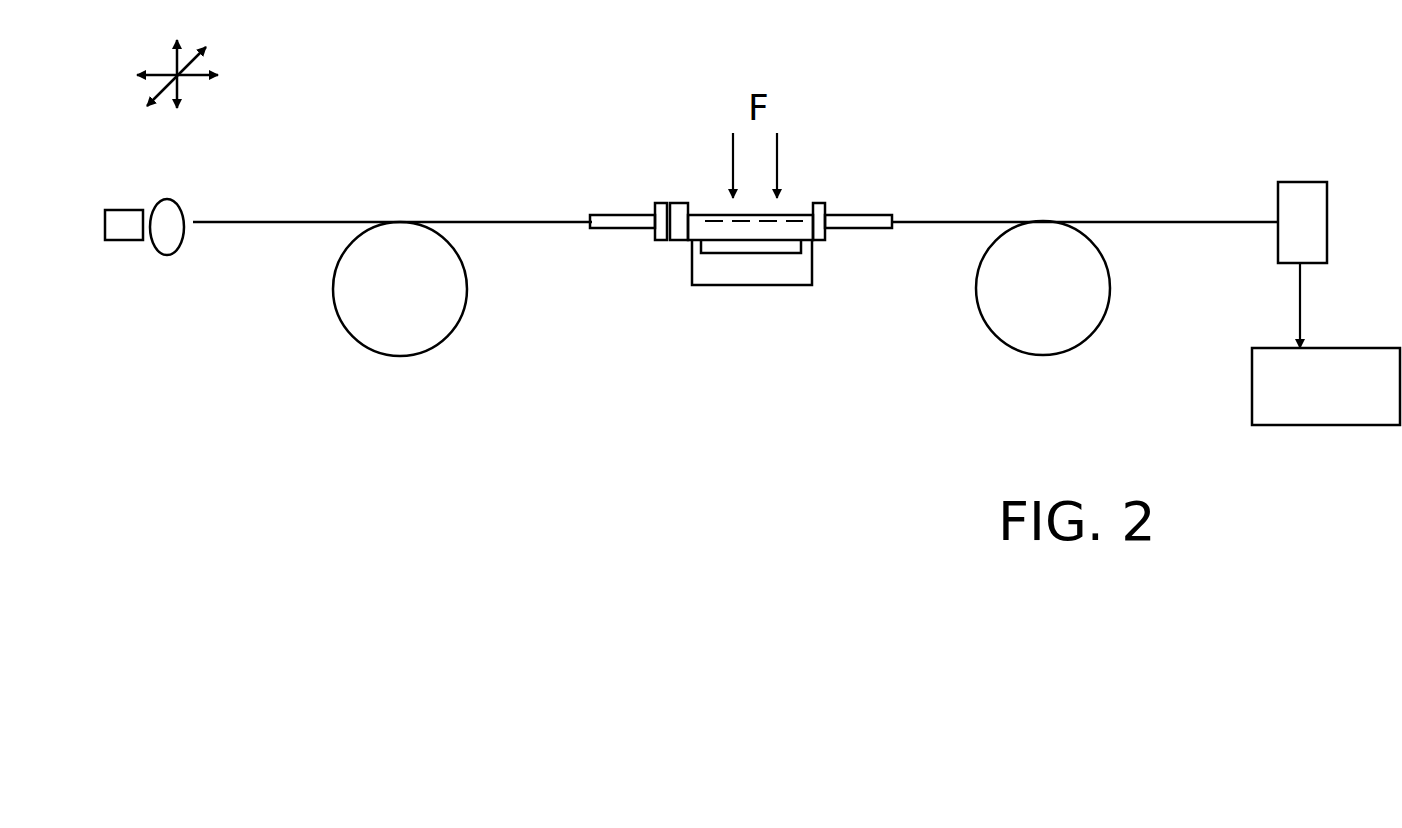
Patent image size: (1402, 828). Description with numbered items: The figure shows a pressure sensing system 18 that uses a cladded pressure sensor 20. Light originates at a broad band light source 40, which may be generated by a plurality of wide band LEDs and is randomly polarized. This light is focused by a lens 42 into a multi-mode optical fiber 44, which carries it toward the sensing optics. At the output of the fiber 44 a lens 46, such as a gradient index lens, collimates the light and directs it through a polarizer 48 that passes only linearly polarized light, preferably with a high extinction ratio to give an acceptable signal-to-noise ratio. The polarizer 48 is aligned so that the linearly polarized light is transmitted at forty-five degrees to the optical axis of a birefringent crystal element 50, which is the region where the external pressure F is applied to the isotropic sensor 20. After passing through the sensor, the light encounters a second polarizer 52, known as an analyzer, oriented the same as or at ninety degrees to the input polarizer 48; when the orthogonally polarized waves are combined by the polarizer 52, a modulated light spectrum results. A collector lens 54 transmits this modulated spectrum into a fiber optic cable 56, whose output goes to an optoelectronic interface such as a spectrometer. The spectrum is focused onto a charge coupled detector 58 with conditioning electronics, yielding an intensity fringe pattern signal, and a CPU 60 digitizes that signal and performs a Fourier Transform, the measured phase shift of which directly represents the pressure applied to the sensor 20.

The pressure sensing system 18 is at (622, 370).
The sensor 20 is at (743, 247).
The broad band light source 40 is at (125, 218).
The lens 42 is at (172, 237).
The multi-mode optical fiber 44 is at (420, 300).
The lens 46 is at (623, 213).
The polarizer 48 is at (655, 242).
The birefringent crystal element 50 is at (680, 200).
The second polarizer 52 is at (818, 203).
The collector lens 54 is at (863, 230).
The fiber optic cable 56 is at (1068, 303).
The charge coupled detector 58 is at (1324, 236).
The CPU 60 is at (1343, 405).